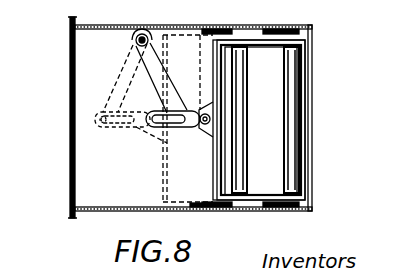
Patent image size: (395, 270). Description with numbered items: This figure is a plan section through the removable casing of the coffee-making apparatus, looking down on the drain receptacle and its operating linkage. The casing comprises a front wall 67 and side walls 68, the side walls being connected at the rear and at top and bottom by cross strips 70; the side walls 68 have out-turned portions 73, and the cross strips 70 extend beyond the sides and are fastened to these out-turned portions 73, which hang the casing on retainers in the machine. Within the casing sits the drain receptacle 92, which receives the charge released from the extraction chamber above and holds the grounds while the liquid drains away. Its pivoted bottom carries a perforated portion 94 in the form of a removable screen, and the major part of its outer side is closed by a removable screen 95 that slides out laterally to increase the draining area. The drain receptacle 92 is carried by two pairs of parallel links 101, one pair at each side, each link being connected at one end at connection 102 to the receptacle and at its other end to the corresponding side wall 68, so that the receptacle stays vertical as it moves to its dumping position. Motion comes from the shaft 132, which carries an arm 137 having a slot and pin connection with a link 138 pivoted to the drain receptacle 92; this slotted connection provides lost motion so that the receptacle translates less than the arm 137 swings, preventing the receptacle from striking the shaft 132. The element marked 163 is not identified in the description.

The front wall 67 is at (313, 85).
The side walls 68 is at (152, 25).
The cross strips 70 is at (70, 113).
The out-turned portions 73 is at (75, 17).
The drain receptacle 92 is at (215, 170).
The perforated portion 94 is at (263, 137).
The removable screen 95 is at (293, 108).
The parallel links 101 is at (283, 20).
The connection 102 is at (295, 198).
The shaft 132 is at (135, 42).
The arm 137 is at (115, 79).
The link 138 is at (193, 125).
The stop 163 is at (200, 212).